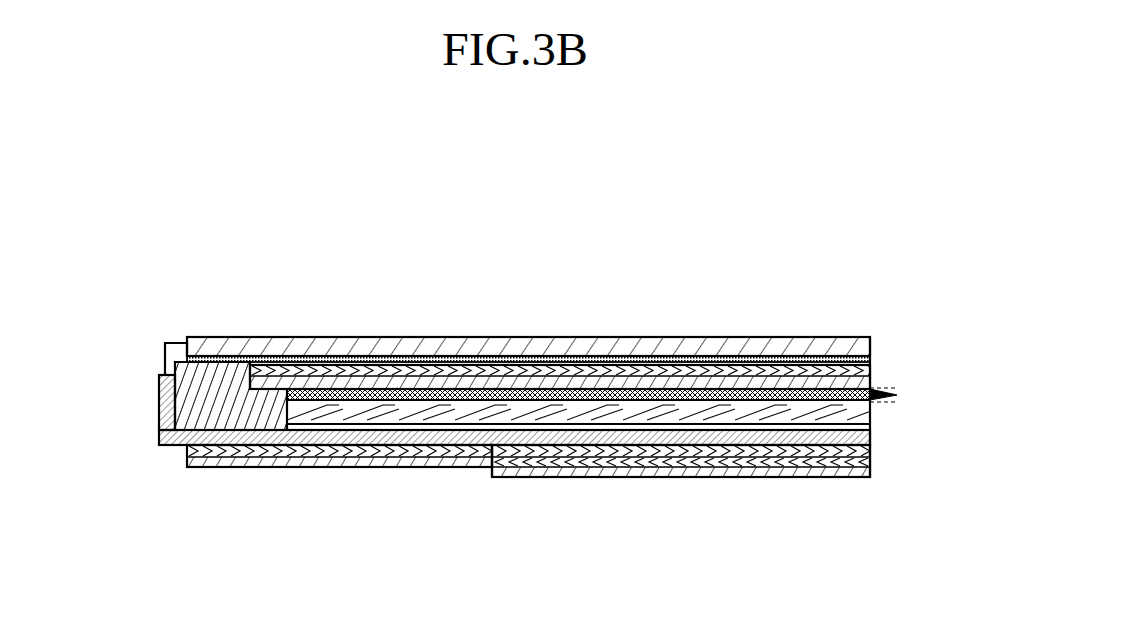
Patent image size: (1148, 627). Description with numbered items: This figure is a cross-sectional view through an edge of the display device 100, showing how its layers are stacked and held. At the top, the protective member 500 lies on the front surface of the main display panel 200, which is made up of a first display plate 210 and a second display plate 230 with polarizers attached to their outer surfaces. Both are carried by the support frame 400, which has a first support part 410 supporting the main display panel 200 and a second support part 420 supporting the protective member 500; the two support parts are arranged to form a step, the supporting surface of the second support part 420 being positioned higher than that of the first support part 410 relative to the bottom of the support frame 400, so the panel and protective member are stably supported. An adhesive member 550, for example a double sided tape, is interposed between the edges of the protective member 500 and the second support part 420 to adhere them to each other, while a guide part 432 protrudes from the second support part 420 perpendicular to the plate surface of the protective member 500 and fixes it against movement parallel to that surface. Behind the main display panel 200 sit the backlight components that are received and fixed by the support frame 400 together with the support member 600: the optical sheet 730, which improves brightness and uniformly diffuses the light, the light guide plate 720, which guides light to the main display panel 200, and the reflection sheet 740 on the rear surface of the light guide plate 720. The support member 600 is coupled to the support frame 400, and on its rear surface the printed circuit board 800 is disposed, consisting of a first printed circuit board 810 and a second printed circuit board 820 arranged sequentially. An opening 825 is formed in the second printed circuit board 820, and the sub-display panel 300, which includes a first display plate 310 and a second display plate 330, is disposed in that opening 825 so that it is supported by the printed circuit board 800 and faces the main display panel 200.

The display device 100 is at (498, 252).
The main display panel 200 is at (528, 317).
The first display plate 210 is at (623, 373).
The second display plate 230 is at (559, 364).
The sub-display panel 300 is at (681, 506).
The first display plate 310 is at (652, 461).
The second display plate 330 is at (663, 523).
The support frame 400 is at (175, 413).
The first support part 410 is at (267, 410).
The second support part 420 is at (216, 400).
The guide part 432 is at (175, 343).
The protective member 500 is at (393, 347).
The adhesive member 550 is at (199, 410).
The support member 600 is at (168, 390).
The light guide plate 720 is at (810, 413).
The optical sheet 730 is at (899, 388).
The reflection sheet 740 is at (748, 427).
The printed circuit board 800 is at (339, 501).
The first printed circuit board 810 is at (348, 513).
The second printed circuit board 820 is at (357, 452).
The opening 825 is at (491, 466).